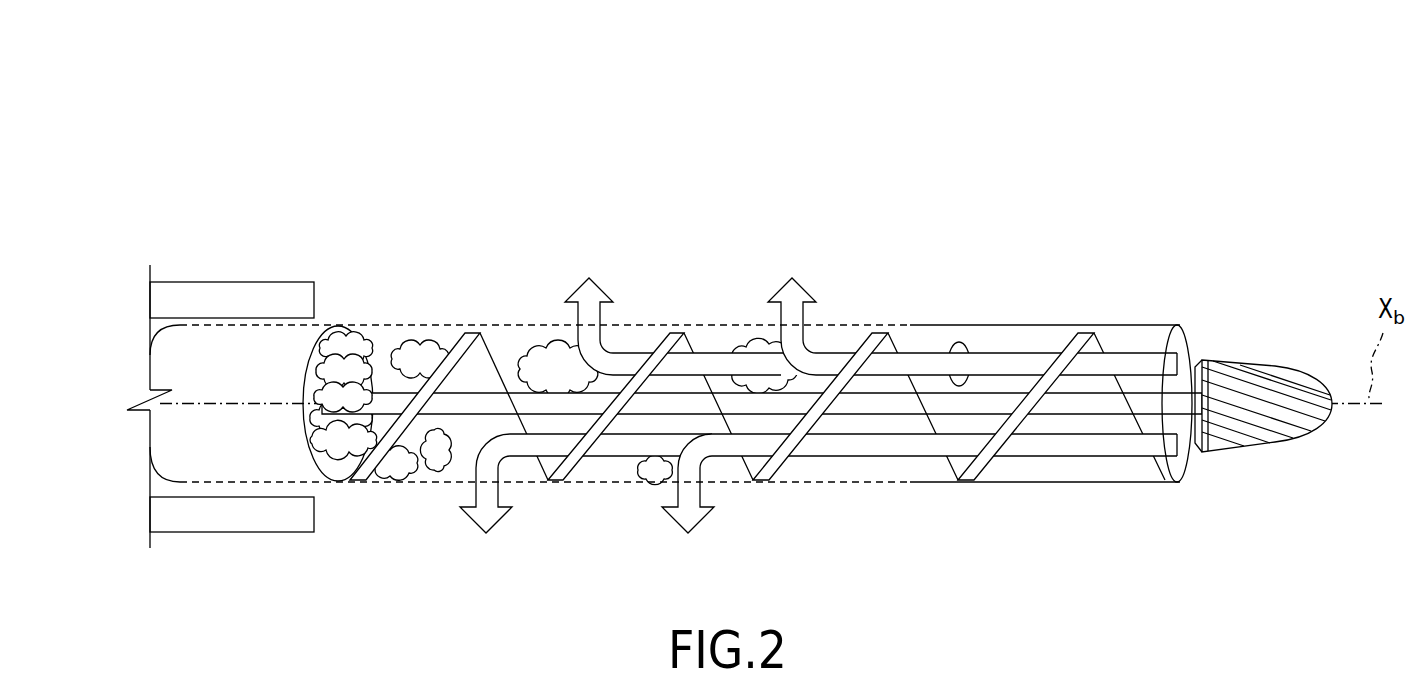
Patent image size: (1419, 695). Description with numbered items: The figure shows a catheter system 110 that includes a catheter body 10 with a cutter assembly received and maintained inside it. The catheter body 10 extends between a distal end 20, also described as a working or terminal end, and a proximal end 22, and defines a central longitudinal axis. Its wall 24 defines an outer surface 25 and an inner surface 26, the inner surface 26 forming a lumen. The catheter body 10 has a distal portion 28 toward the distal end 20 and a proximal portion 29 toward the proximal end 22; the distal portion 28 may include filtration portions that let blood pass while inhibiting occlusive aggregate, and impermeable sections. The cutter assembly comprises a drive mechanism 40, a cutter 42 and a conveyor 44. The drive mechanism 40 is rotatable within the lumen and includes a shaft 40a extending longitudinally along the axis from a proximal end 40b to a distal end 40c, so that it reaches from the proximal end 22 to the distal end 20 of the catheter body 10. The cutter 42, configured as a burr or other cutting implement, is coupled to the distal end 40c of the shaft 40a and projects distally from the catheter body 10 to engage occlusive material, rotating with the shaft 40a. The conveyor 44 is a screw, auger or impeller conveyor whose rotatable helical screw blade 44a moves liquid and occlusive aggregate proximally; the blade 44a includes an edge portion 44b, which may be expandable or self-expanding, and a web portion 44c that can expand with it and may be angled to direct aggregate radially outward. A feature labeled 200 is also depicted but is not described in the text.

The catheter system 110 is at (502, 36).
The catheter body 10 is at (748, 278).
The distal end 20 is at (1172, 328).
The proximal end 22 is at (148, 447).
The wall 24 is at (423, 482).
The outer surface 25 is at (688, 483).
The inner surface 26 is at (452, 473).
The distal portion 28 is at (1034, 177).
The proximal portion 29 is at (298, 180).
The drive mechanism 40 is at (163, 370).
The shaft 40a is at (848, 414).
The proximal end 40b is at (345, 400).
The distal end 40c is at (1178, 417).
The cutter 42 is at (1258, 375).
The conveyor 44 is at (465, 335).
The helical screw blade 44a is at (415, 406).
The edge portion 44b is at (645, 340).
The web portion 44c is at (480, 345).
The mounting flange 200 is at (205, 282).